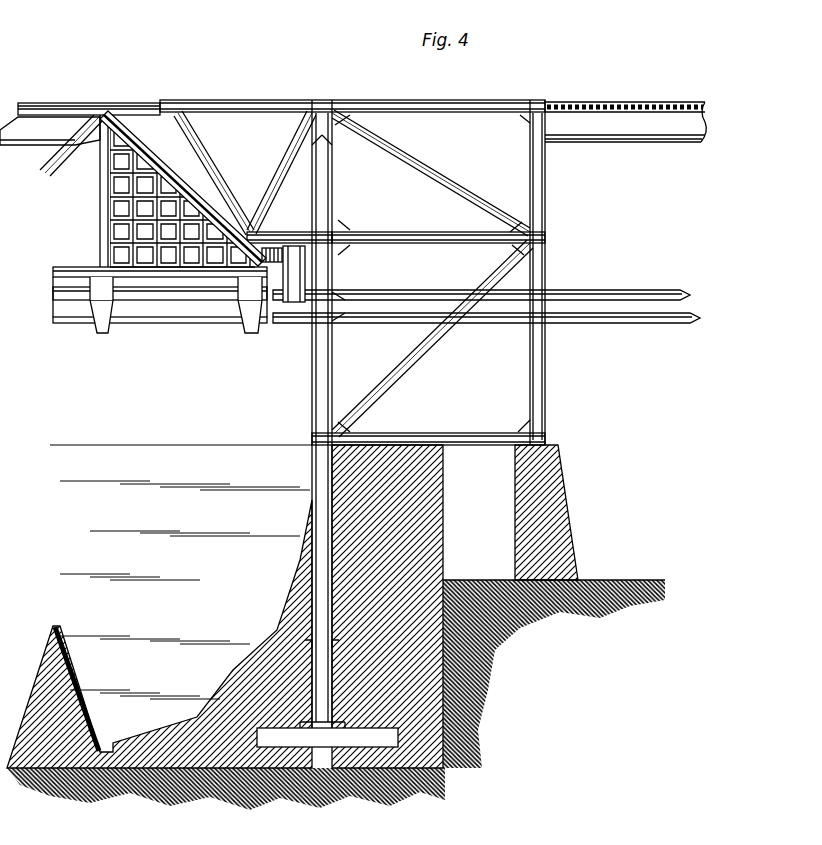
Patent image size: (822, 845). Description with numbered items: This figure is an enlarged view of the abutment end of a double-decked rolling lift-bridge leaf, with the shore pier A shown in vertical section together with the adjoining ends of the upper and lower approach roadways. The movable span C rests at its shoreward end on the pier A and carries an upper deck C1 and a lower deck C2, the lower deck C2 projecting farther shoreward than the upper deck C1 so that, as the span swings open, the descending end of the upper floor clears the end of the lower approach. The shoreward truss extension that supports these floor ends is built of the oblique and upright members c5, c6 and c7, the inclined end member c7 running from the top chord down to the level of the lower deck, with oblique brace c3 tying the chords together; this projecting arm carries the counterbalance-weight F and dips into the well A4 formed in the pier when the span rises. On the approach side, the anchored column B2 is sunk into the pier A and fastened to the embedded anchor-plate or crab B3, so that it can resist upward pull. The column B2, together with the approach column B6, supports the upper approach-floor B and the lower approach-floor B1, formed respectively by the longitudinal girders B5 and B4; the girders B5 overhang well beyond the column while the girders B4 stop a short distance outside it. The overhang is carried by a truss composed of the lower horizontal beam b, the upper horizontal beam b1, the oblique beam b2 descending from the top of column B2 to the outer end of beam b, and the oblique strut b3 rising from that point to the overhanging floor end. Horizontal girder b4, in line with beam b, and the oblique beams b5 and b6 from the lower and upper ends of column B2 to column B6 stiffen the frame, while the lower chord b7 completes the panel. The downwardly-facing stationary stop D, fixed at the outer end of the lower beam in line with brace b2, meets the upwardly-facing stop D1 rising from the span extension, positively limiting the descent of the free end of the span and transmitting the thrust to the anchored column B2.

The shore or abutment pier A is at (300, 541).
The well A4 is at (113, 683).
The upper approach-floor B is at (640, 101).
The lower approach-floor B1 is at (654, 290).
The anchored column B2 is at (330, 353).
The anchor-plate or crab B3 is at (357, 738).
The lower approach girder B4 is at (670, 323).
The upper approach girder B5 is at (697, 142).
The approach column B6 is at (530, 350).
The lower horizontal beam b is at (299, 232).
The upper horizontal beam b1 is at (284, 101).
The oblique beam b2 is at (290, 157).
The oblique strut b3 is at (218, 176).
The horizontal girder b4 is at (405, 224).
The lower oblique beam b5 is at (424, 350).
The upper oblique beam b6 is at (466, 194).
The lower chord b7 is at (428, 439).
The movable span or leaf C is at (118, 103).
The upper deck C1 is at (38, 98).
The lower deck C2 is at (74, 267).
The oblique truss member c3 is at (181, 278).
The truss extension member c5 is at (45, 170).
The truss extension member c6 is at (159, 197).
The end truss member c7 is at (197, 211).
The stationary stop D is at (268, 251).
The movable stop D1 is at (264, 276).
The counterbalance-weight F is at (140, 195).